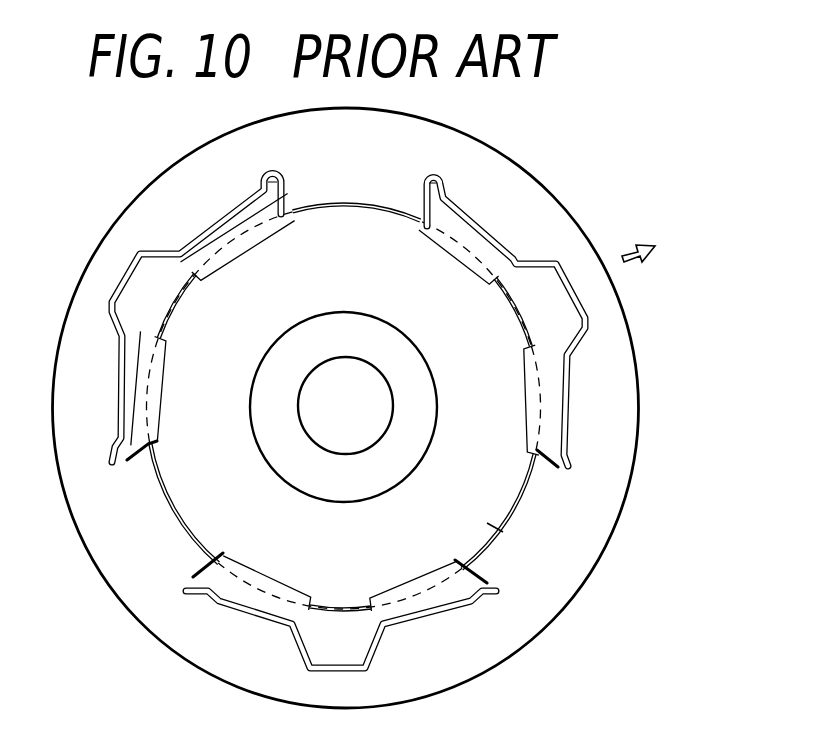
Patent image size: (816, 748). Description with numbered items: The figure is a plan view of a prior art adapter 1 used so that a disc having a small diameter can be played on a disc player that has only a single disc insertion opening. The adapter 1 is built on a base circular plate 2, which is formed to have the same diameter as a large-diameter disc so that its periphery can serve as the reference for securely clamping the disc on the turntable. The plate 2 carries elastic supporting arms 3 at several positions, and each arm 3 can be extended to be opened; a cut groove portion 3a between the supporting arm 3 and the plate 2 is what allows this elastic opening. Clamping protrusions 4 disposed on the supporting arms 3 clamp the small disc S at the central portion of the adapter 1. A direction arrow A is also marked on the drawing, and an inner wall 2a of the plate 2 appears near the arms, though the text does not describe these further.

The adapter 1 is at (533, 172).
The base circular plate 2 is at (621, 472).
The inner ring wall 2a is at (519, 503).
The elastic supporting arms 3 is at (503, 258).
The cut groove portion 3a is at (466, 223).
The clamping protrusions 4 is at (485, 287).
The disc having a small diameter S is at (502, 530).
The direction arrow A is at (648, 247).